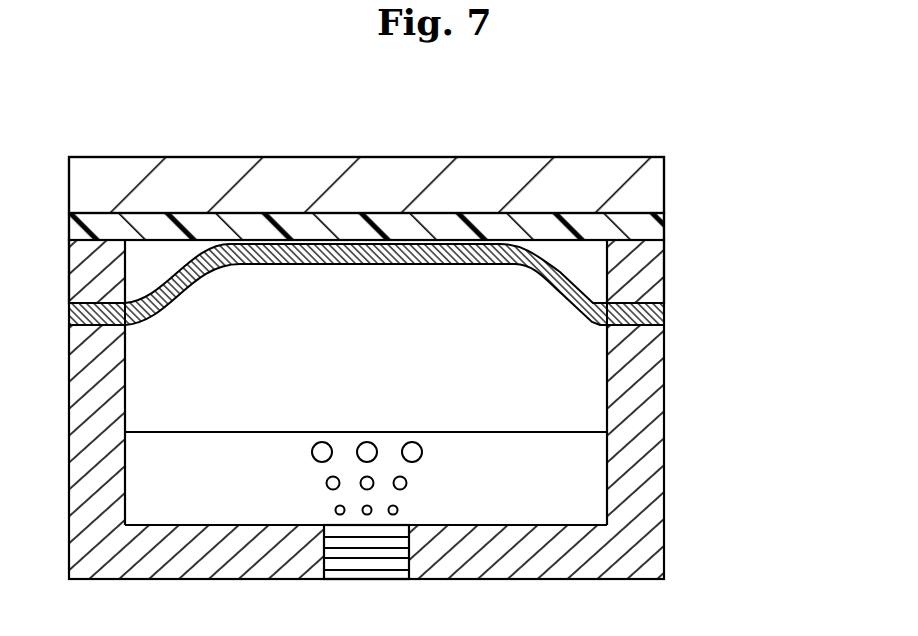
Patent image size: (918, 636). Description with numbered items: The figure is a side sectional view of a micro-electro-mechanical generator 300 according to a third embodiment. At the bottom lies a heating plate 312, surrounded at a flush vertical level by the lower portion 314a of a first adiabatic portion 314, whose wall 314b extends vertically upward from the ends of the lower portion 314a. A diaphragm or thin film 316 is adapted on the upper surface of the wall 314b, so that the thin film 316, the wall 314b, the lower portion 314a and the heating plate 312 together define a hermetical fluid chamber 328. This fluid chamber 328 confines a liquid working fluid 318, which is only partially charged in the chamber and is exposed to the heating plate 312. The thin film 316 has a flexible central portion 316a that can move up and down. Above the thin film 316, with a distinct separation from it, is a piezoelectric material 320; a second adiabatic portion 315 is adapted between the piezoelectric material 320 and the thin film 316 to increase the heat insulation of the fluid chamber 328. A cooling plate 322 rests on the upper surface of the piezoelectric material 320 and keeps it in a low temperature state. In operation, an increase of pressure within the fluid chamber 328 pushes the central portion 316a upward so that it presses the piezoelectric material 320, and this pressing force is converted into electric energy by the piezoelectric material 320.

The micro-electro-mechanical generator 300 is at (530, 155).
The heating plate 312 is at (367, 563).
The first adiabatic portion 314 is at (433, 466).
The lower portion 314a is at (580, 562).
The wall 314b is at (625, 487).
The second adiabatic portion 315 is at (645, 272).
The thin film 316 is at (645, 314).
The central portion 316a is at (297, 245).
The working fluid 318 is at (583, 478).
The piezoelectric material 320 is at (645, 226).
The cooling plate 322 is at (645, 190).
The fluid chamber 328 is at (583, 378).